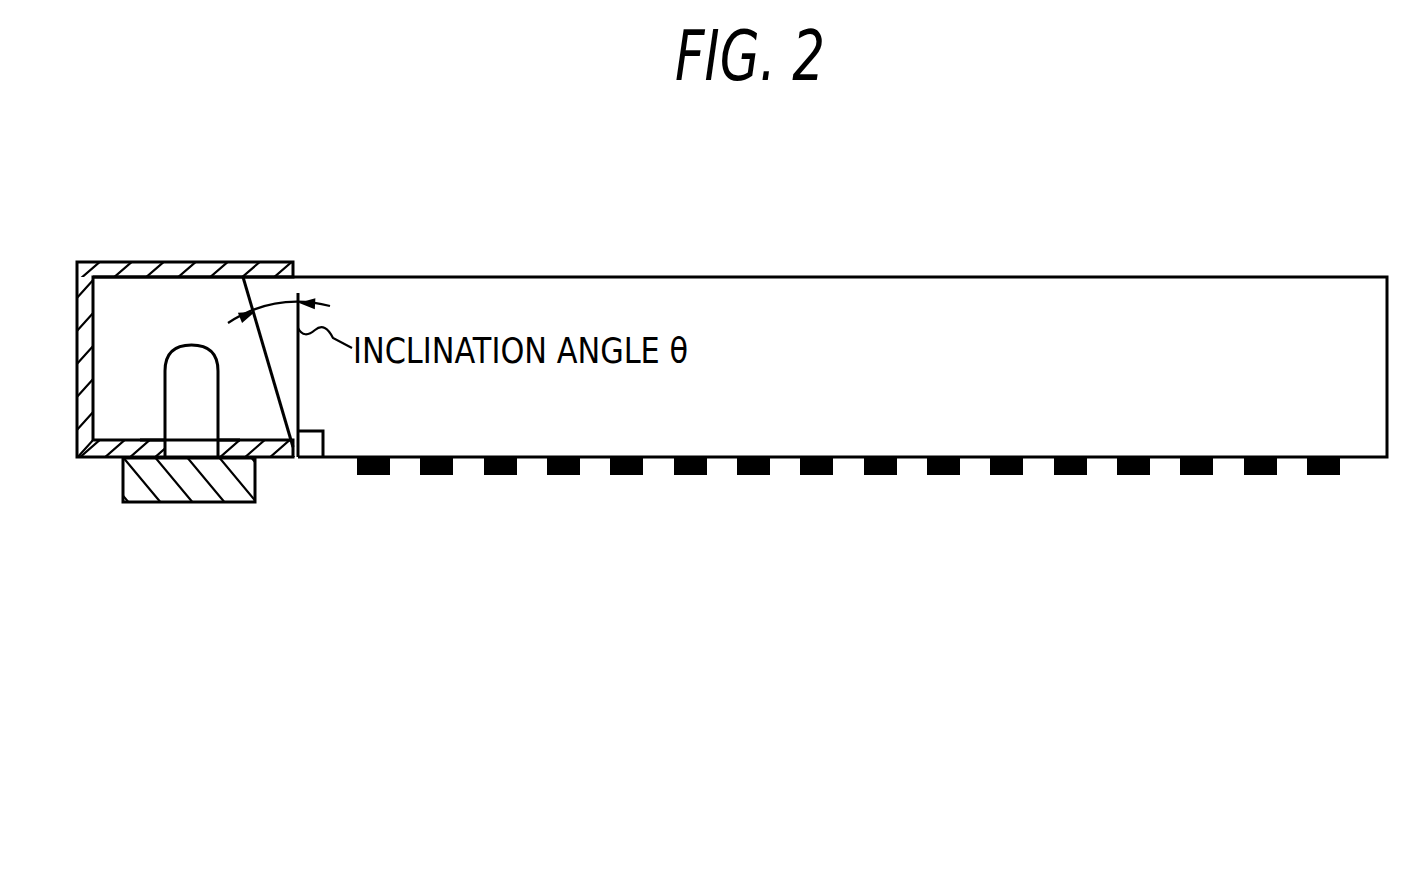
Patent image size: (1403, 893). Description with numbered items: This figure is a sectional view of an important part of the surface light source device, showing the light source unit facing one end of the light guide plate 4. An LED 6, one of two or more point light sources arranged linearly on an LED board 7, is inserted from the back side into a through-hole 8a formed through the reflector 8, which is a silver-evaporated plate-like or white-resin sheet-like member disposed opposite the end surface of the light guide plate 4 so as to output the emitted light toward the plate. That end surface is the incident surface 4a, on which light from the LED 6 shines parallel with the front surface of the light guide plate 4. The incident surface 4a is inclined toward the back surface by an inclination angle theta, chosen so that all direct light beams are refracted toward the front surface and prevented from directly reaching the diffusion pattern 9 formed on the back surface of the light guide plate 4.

The light guide plate 4 is at (1268, 277).
The incident surface 4a is at (262, 367).
The LED 6 is at (177, 347).
The LED board 7 is at (176, 500).
The reflector 8 is at (195, 267).
The through-hole 8a is at (160, 436).
The diffusion pattern 9 is at (508, 476).